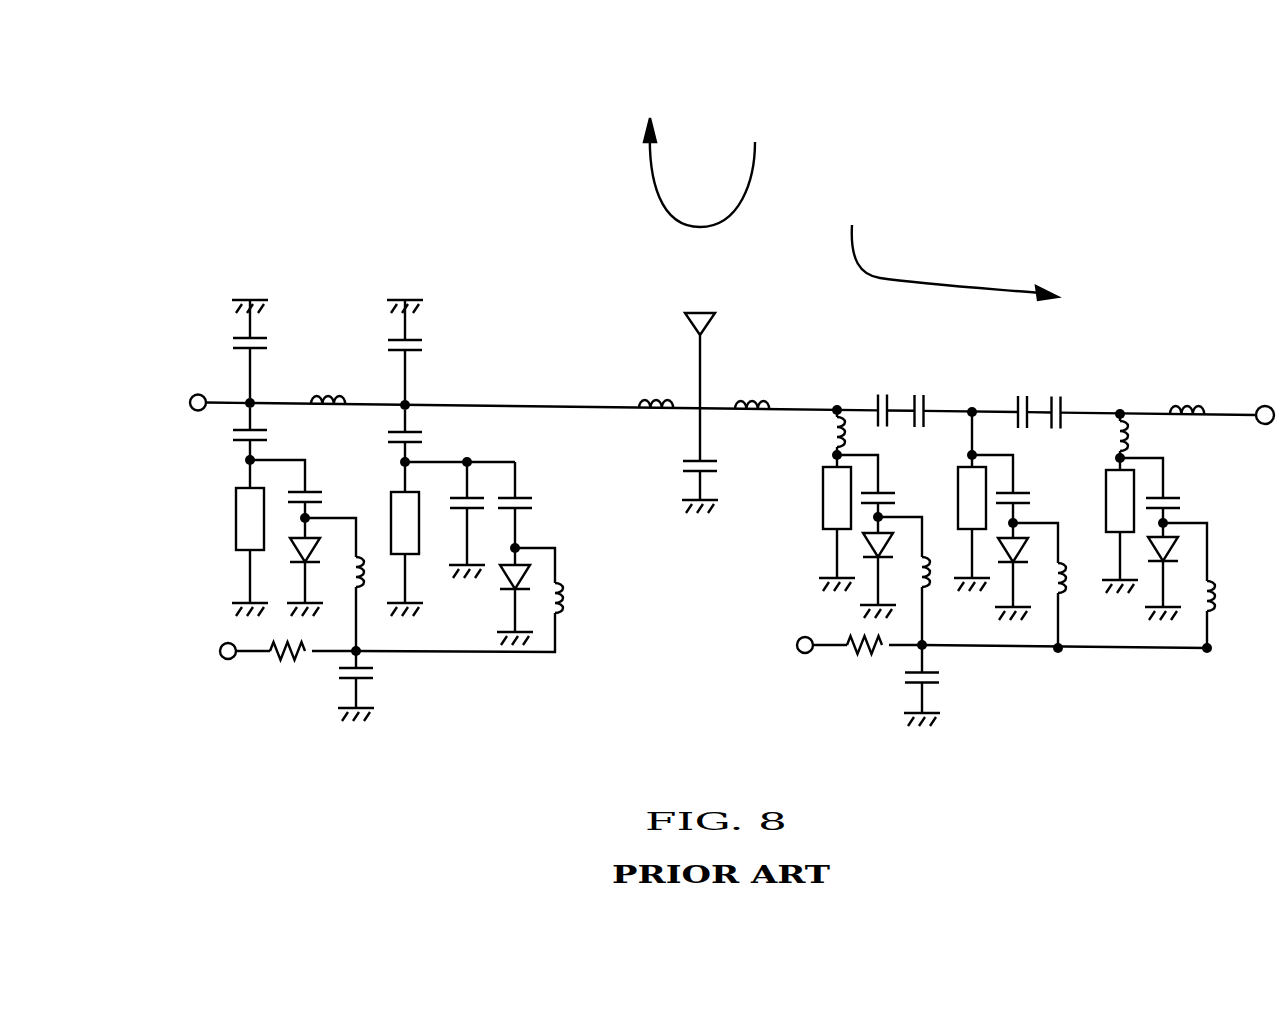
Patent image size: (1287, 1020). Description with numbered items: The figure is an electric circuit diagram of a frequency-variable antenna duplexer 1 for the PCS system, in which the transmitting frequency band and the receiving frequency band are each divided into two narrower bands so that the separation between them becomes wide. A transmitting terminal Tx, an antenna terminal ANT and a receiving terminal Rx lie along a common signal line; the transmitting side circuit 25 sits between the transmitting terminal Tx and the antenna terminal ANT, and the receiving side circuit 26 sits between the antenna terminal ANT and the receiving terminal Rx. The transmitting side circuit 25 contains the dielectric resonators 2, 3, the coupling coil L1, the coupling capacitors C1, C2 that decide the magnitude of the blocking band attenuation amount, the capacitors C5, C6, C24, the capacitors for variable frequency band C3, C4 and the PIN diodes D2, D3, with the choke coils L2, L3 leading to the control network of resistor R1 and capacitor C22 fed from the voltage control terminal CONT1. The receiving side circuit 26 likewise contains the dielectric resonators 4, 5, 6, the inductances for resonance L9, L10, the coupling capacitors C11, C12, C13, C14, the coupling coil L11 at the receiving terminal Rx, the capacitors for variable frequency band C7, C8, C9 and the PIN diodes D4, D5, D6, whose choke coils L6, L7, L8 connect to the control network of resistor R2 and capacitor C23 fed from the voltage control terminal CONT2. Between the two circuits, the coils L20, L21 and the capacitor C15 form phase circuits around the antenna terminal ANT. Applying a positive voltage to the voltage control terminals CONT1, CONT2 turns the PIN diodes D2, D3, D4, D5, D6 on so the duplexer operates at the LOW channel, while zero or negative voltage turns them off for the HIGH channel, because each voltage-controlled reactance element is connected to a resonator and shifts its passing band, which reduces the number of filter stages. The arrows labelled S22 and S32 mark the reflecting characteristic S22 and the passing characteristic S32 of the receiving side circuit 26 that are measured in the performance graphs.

The antenna duplexer 1 is at (208, 272).
The transmitting side circuit 25 is at (446, 289).
The receiving side circuit 26 is at (1097, 321).
The resonator 2 is at (236, 525).
The resonator 3 is at (418, 536).
The resonator 4 is at (820, 493).
The resonator 5 is at (964, 470).
The resonator 6 is at (1103, 474).
The transmitting terminal Tx is at (197, 412).
The receiving terminal Rx is at (1268, 403).
The antenna terminal ANT is at (701, 311).
The voltage control terminal CONT1 is at (223, 643).
The voltage control terminal CONT2 is at (797, 645).
The coupling capacitor C1 is at (268, 436).
The coupling capacitor C2 is at (420, 433).
The capacitor for variable frequency band C3 is at (320, 492).
The capacitor for variable frequency band C4 is at (532, 496).
The capacitor C5 is at (266, 339).
The capacitor C6 is at (420, 343).
The capacitor for variable frequency band C7 is at (885, 504).
The capacitor for variable frequency band C8 is at (1027, 504).
The capacitor for variable frequency band C9 is at (1185, 504).
The coupling capacitor C11 is at (876, 396).
The coupling capacitor C12 is at (914, 394).
The coupling capacitor C13 is at (1017, 394).
The coupling capacitor C14 is at (1061, 396).
The capacitor C15 is at (705, 474).
The capacitor for supplying a control voltage C22 is at (346, 680).
The capacitor for supplying a control voltage C23 is at (930, 683).
The capacitor C24 is at (470, 496).
The coupling coil L1 is at (335, 396).
The choke coil L2 is at (362, 587).
The choke coil L3 is at (560, 608).
The choke coil L6 is at (926, 588).
The choke coil L7 is at (1062, 588).
The choke coil L8 is at (1214, 600).
The inductance for resonance L9 is at (845, 438).
The inductance for resonance L10 is at (1110, 438).
The coupling coil L11 is at (1196, 392).
The coil L20 is at (644, 394).
The coil L21 is at (753, 394).
The PIN diode D2 is at (319, 546).
The PIN diode D3 is at (524, 570).
The PIN diode D4 is at (887, 546).
The PIN diode D5 is at (1027, 561).
The PIN diode D6 is at (1174, 546).
The resistor for supplying a control voltage R1 is at (270, 662).
The resistor for supplying a control voltage R2 is at (860, 661).
The reflecting characteristic S22 is at (757, 158).
The passing characteristic S32 is at (855, 240).